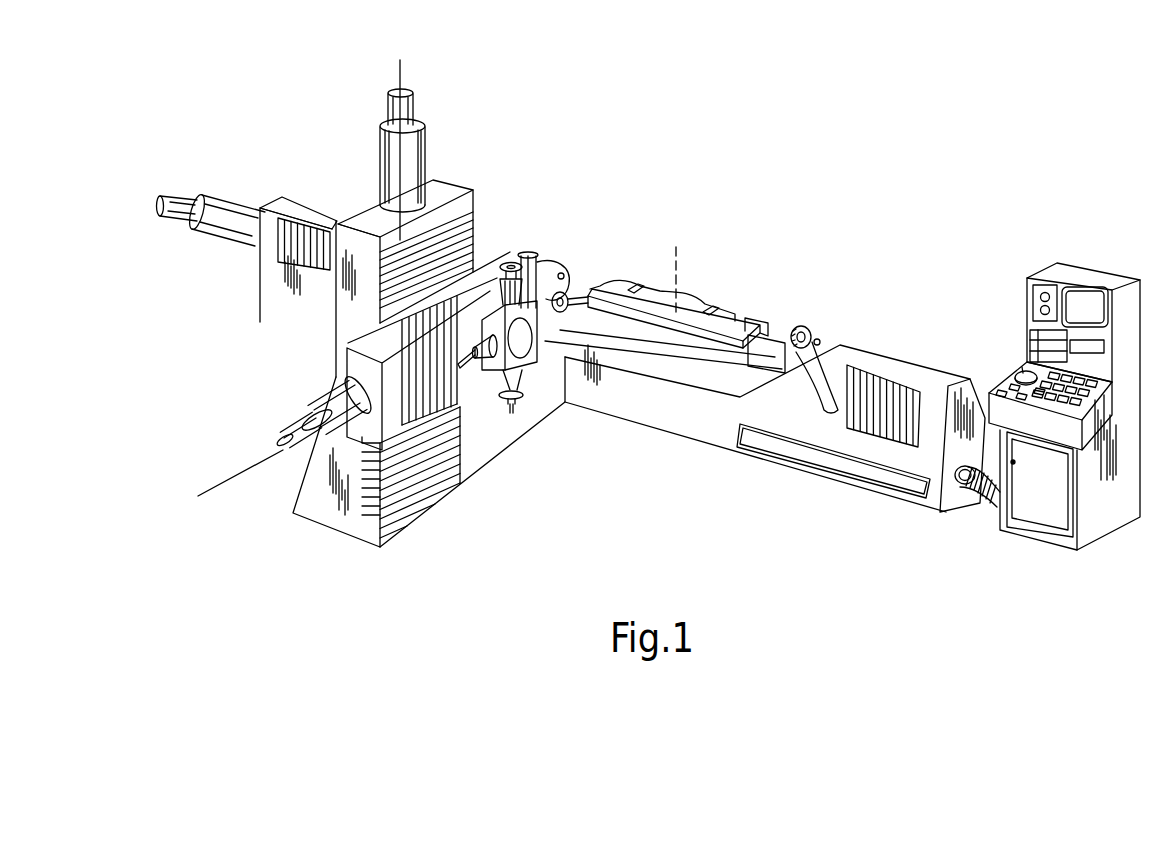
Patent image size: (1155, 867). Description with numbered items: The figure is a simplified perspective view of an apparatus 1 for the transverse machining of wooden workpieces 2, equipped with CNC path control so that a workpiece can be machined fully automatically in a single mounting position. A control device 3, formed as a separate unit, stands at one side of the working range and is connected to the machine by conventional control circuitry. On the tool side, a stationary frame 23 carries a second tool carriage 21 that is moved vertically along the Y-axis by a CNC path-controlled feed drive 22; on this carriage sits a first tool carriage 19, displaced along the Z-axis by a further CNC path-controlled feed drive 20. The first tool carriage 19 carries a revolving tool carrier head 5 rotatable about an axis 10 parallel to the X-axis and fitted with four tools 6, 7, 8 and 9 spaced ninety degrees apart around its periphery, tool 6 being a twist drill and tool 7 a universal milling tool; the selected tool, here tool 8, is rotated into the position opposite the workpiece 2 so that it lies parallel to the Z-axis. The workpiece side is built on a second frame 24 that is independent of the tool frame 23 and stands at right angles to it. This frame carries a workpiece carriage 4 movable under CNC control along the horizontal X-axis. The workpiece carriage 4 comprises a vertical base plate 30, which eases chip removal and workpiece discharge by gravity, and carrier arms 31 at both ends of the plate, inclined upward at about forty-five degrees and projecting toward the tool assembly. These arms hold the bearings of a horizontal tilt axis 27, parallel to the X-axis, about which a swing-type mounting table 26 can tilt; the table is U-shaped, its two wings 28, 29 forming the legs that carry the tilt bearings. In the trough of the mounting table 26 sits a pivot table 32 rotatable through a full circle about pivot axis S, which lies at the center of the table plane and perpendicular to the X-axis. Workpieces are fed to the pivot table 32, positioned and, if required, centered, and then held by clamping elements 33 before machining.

The apparatus 1 is at (643, 173).
The workpiece 2 is at (688, 300).
The control device 3 is at (1058, 272).
The workpiece carriage 4 is at (692, 368).
The revolving tool carrier head 5 is at (521, 349).
The tool 6 is at (459, 368).
The tool 7 is at (510, 405).
The tool 8 is at (568, 280).
The tool 9 is at (521, 262).
The axis 10 is at (565, 298).
The first tool carriage 19 is at (357, 365).
The feed drive 20 is at (357, 401).
The second tool carriage 21 is at (373, 318).
The feed drive 22 is at (393, 153).
The frame 23 is at (323, 508).
The second frame 24 is at (729, 435).
The mounting table 26 is at (760, 350).
The tilt axis 27 is at (818, 343).
The wing 28 is at (800, 327).
The wing 29 is at (551, 264).
The base plate 30 is at (728, 380).
The carrier arm 31 is at (562, 275).
The pivot table 32 is at (664, 318).
The clamping element 33 is at (635, 283).